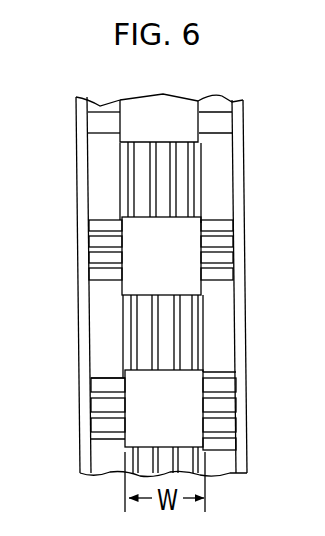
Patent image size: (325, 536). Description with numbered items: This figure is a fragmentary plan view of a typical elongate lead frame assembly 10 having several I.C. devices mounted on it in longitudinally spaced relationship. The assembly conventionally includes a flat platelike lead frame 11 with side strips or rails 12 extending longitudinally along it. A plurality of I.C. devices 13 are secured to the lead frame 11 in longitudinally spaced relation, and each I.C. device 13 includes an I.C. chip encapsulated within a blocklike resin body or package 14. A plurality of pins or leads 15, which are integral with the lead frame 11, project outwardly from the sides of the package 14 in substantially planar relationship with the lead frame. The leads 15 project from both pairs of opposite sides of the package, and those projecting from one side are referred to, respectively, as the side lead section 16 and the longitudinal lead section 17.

The lead frame assembly 10 is at (254, 191).
The lead frame 11 is at (249, 427).
The side strips or rails 12 is at (82, 342).
The I.C. device 13 is at (114, 221).
The package 14 is at (187, 257).
The leads 15 is at (100, 289).
The side lead section 16 is at (83, 227).
The longitudinal lead section 17 is at (192, 140).